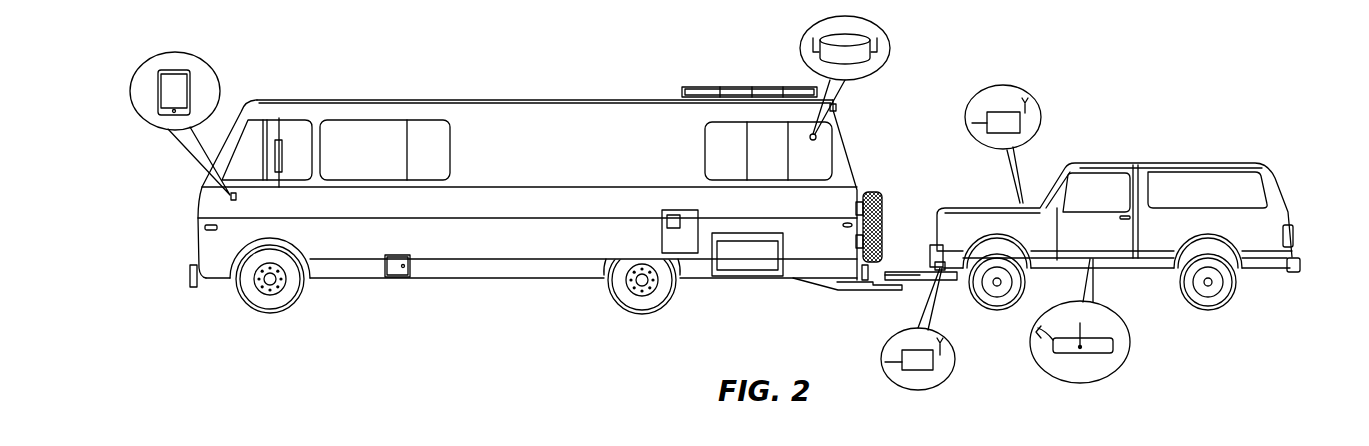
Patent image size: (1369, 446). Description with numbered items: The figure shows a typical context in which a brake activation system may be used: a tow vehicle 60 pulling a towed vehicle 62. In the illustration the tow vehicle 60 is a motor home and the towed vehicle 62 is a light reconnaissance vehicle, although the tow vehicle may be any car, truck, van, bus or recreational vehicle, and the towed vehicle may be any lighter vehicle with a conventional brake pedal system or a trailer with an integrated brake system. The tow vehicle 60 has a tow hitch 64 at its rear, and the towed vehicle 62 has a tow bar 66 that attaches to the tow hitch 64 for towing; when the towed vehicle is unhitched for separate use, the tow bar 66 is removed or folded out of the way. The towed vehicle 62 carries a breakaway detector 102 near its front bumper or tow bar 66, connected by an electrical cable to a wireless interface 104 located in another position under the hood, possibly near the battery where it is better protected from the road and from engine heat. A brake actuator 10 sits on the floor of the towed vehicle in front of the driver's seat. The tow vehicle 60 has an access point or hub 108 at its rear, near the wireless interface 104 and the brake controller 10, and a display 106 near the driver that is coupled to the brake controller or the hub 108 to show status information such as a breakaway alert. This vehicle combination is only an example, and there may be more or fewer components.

The brake actuator 10 is at (1100, 353).
The tow vehicle 60 is at (217, 203).
The towed vehicle 62 is at (1272, 190).
The tow hitch 64 is at (878, 293).
The tow bar 66 is at (903, 271).
The breakaway detector 102 is at (926, 371).
The wireless interface 104 is at (1000, 112).
The display 106 is at (158, 87).
The access point or hub 108 is at (860, 66).